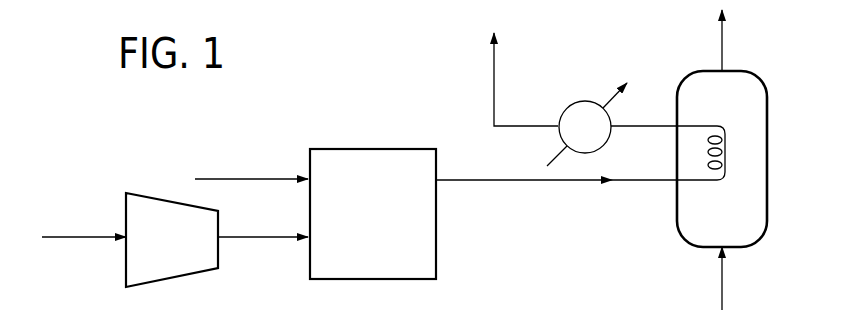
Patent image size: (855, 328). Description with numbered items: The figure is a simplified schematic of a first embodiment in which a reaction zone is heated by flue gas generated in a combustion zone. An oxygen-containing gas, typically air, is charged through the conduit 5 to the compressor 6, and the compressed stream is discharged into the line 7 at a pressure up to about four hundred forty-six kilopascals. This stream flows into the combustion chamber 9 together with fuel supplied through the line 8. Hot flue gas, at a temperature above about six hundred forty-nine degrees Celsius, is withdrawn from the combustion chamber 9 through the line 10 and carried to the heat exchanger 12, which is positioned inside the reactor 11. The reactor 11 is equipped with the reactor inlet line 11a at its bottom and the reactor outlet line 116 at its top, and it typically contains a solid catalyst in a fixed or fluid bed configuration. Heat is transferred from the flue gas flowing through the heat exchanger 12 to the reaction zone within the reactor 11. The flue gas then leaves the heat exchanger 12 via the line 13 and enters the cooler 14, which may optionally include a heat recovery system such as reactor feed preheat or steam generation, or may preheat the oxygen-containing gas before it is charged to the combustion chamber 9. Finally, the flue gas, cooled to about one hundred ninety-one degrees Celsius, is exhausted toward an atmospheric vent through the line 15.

The conduit 5 is at (72, 240).
The compressor 6 is at (175, 248).
The line 7 is at (277, 242).
The line 8 is at (250, 178).
The combustion chamber 9 is at (385, 224).
The line 10 is at (497, 183).
The reactor 11 is at (761, 237).
The reactor inlet line 11a is at (723, 303).
The reactor outlet line 116 is at (729, 31).
The heat exchanger 12 is at (729, 158).
The line 13 is at (638, 128).
The cooler 14 is at (587, 124).
The line 15 is at (494, 85).